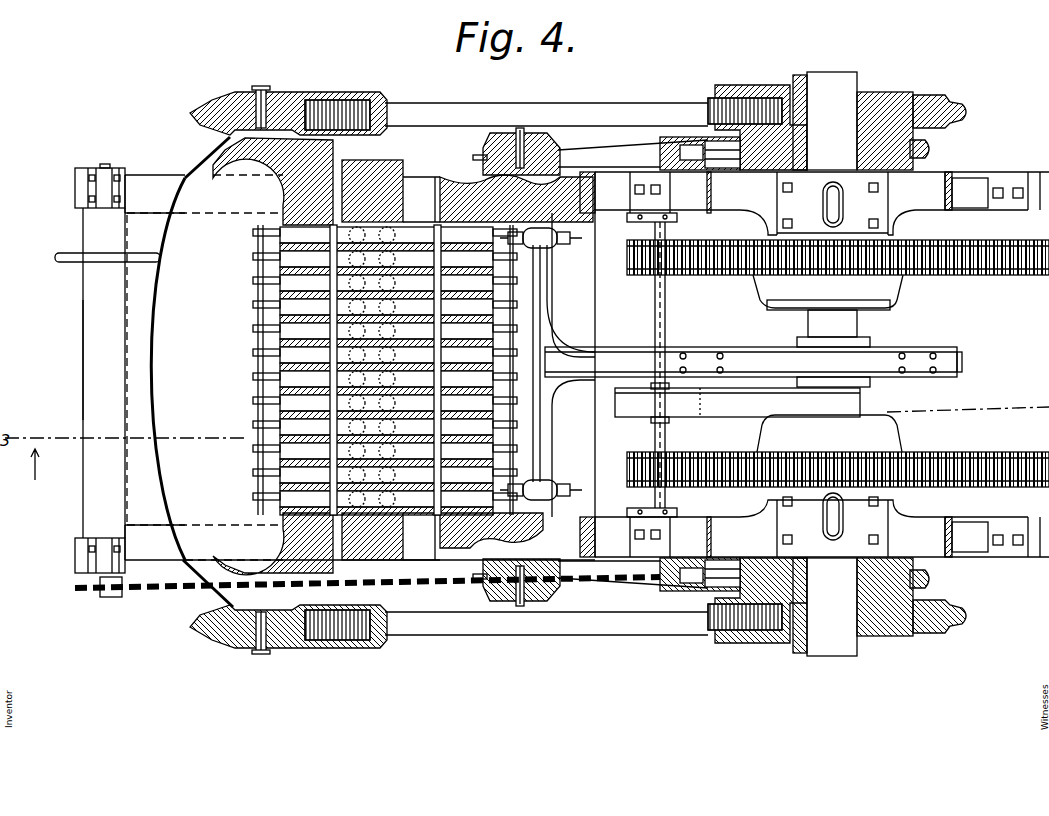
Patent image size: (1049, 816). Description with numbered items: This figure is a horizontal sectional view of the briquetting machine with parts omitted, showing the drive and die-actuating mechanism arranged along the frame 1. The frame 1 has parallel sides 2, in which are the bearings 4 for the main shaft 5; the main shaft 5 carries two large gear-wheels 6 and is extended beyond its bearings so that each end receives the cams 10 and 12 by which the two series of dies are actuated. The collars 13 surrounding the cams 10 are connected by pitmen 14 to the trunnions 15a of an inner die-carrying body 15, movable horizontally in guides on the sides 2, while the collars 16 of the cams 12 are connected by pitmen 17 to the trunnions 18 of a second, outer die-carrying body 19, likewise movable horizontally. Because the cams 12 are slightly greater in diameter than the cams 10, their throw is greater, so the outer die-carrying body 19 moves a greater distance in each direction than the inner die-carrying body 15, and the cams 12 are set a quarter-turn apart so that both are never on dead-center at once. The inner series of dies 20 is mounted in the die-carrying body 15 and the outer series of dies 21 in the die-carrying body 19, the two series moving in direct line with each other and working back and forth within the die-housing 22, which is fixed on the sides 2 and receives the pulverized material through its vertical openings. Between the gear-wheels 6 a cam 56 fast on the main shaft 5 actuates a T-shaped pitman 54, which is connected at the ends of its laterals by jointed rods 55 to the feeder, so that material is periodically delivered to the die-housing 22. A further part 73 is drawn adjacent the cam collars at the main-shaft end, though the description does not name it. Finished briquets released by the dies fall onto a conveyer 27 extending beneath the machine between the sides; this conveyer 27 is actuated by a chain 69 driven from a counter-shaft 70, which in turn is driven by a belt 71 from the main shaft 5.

The frame 1 is at (69, 398).
The sides 2 is at (161, 212).
The bearings 4 is at (850, 203).
The main shaft 5 is at (853, 326).
The gear-wheels 6 is at (972, 274).
The cams 10 is at (912, 148).
The cams 12 is at (890, 96).
The collars 13 is at (713, 572).
The pitmen 14 is at (622, 145).
The die-carrying body 15 is at (588, 210).
The trunnions 15a is at (508, 131).
The collars 16 is at (950, 106).
The pitmen 17 is at (400, 108).
The trunnions 18 is at (285, 93).
The die-carrying body 19 is at (293, 183).
The dies 20 is at (450, 380).
The dies 21 is at (308, 332).
The die-housing 22 is at (403, 177).
The conveyer 27 is at (97, 502).
The T-shaped pitman 54 is at (637, 362).
The jointed rods 55 is at (578, 487).
The cam 56 is at (763, 360).
The chain 69 is at (172, 592).
The counter-shaft 70 is at (663, 443).
The belt 71 is at (750, 408).
The bearing cap 73 is at (753, 128).